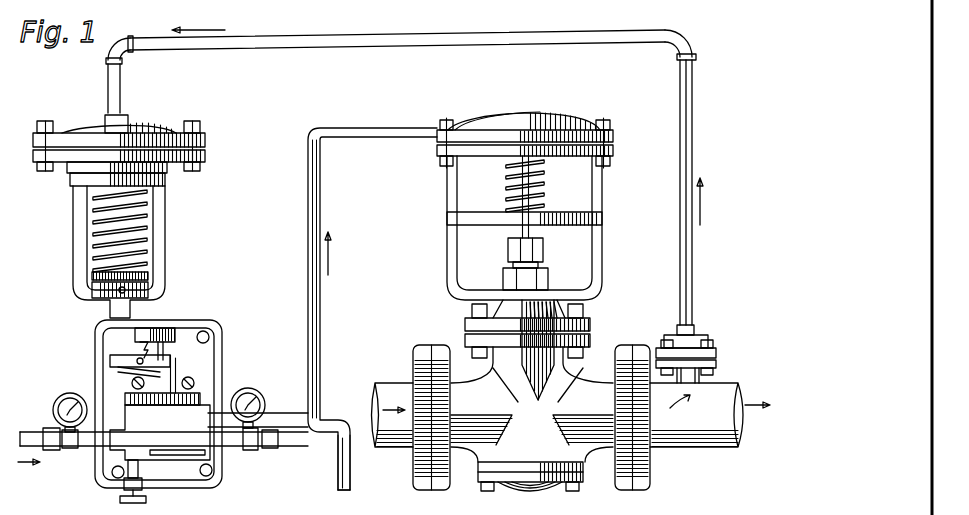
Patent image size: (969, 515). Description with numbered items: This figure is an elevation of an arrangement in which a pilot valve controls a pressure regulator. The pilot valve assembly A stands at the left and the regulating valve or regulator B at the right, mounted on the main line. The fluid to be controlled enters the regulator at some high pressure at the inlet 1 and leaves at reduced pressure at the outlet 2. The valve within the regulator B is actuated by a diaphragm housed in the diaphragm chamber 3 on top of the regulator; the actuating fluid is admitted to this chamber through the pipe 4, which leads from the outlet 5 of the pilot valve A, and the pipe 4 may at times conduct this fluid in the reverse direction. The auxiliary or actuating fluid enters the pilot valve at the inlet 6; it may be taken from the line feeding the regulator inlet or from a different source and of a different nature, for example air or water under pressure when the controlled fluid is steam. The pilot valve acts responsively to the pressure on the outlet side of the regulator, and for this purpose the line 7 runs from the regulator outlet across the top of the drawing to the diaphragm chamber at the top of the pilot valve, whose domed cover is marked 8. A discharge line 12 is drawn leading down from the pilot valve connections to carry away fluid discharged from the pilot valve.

The regulator inlet 1 is at (445, 447).
The regulator outlet 2 is at (604, 447).
The diaphragm chamber 3 is at (548, 115).
The pipe 4 is at (316, 198).
The outlet of pilot valve 5 is at (205, 440).
The inlet of pilot valve 6 is at (125, 447).
The line 7 is at (358, 38).
The diaphragm dome of pilot regulator 8 is at (143, 125).
The drain pipe 12 is at (344, 478).
The pilot valve assembly A is at (177, 240).
The regulating valve B is at (621, 231).